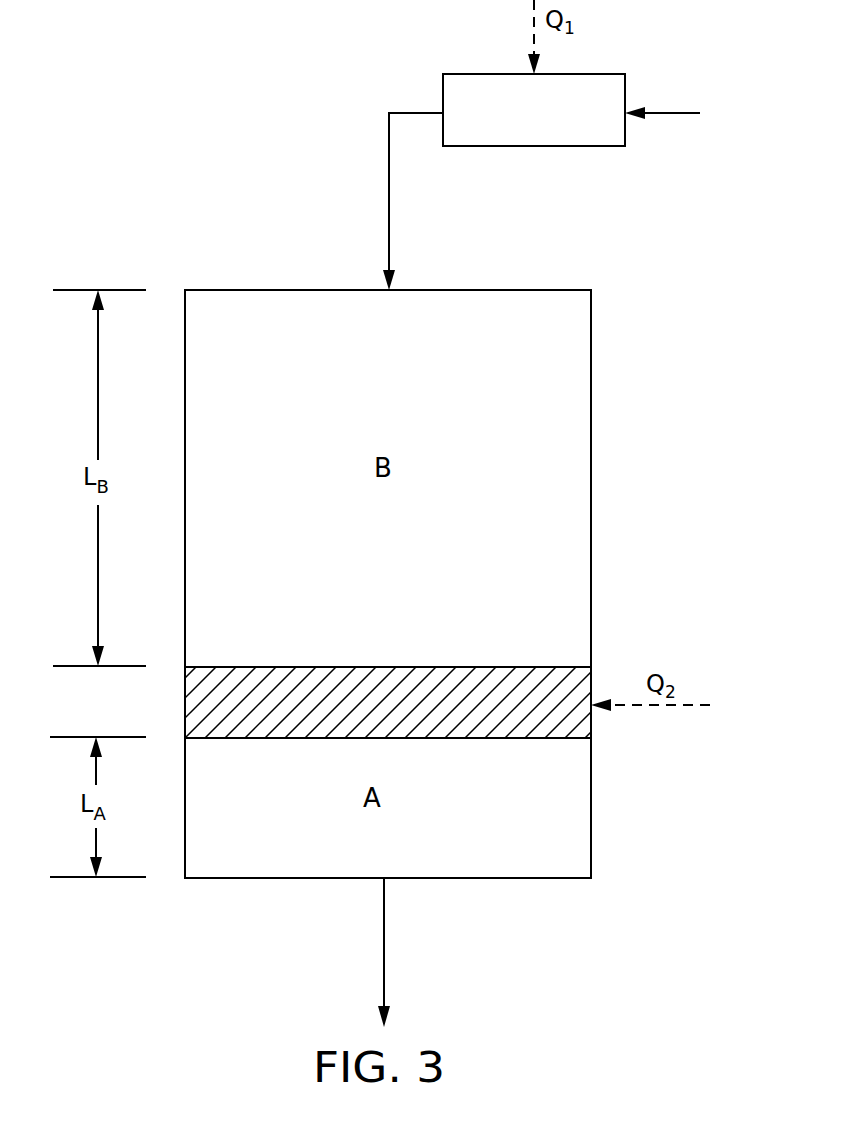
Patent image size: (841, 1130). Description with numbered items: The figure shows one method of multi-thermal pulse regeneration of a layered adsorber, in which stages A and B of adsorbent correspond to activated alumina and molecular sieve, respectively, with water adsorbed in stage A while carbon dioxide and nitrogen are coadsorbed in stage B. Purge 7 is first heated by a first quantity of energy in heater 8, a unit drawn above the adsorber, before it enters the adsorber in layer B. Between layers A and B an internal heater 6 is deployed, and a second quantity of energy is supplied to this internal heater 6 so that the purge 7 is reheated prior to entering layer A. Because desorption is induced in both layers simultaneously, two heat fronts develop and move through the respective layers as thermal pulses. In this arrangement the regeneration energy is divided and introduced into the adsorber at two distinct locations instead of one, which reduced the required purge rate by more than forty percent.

The internal heater 6 is at (380, 702).
The purge 7 is at (662, 98).
The heater 8 is at (534, 110).